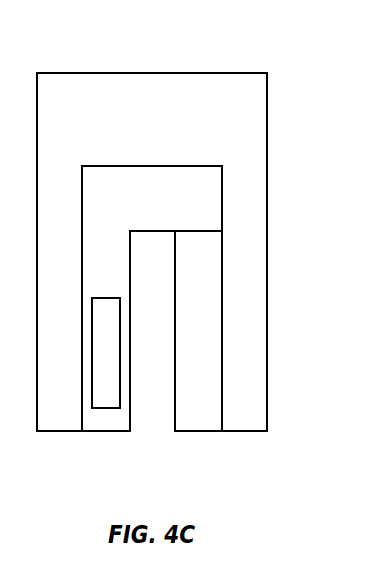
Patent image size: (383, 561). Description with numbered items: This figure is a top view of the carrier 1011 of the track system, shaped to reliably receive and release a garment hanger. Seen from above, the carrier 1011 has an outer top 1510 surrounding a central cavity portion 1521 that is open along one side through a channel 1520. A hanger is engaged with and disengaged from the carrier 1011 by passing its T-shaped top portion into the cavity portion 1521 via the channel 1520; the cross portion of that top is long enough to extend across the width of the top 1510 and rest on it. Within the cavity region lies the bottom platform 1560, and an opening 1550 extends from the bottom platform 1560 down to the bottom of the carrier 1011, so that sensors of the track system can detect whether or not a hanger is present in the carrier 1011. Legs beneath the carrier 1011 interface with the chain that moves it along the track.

The carrier 1011 is at (133, 58).
The top 1510 is at (226, 85).
The cavity portion 1521 is at (196, 184).
The channel 1520 is at (152, 418).
The opening 1550 is at (107, 390).
The bottom platform 1560 is at (197, 420).